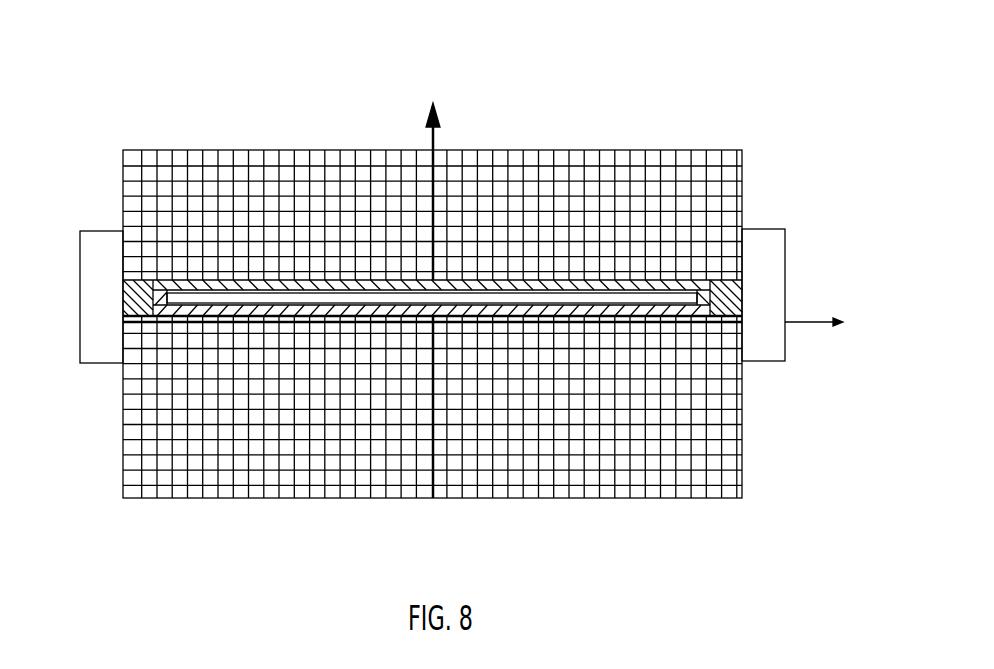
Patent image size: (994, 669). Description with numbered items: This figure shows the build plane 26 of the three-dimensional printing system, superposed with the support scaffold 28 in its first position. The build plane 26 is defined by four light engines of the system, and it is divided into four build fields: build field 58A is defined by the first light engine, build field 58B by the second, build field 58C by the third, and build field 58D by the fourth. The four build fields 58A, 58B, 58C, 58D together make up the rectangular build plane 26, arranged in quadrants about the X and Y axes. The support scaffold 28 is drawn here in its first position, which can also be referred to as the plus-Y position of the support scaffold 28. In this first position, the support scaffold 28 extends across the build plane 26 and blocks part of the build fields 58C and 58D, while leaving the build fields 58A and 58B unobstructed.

The build plane 26 is at (643, 97).
The support scaffold 28 is at (62, 289).
The build field 58A is at (180, 475).
The build field 58B is at (637, 478).
The build field 58C is at (210, 173).
The build field 58D is at (570, 158).